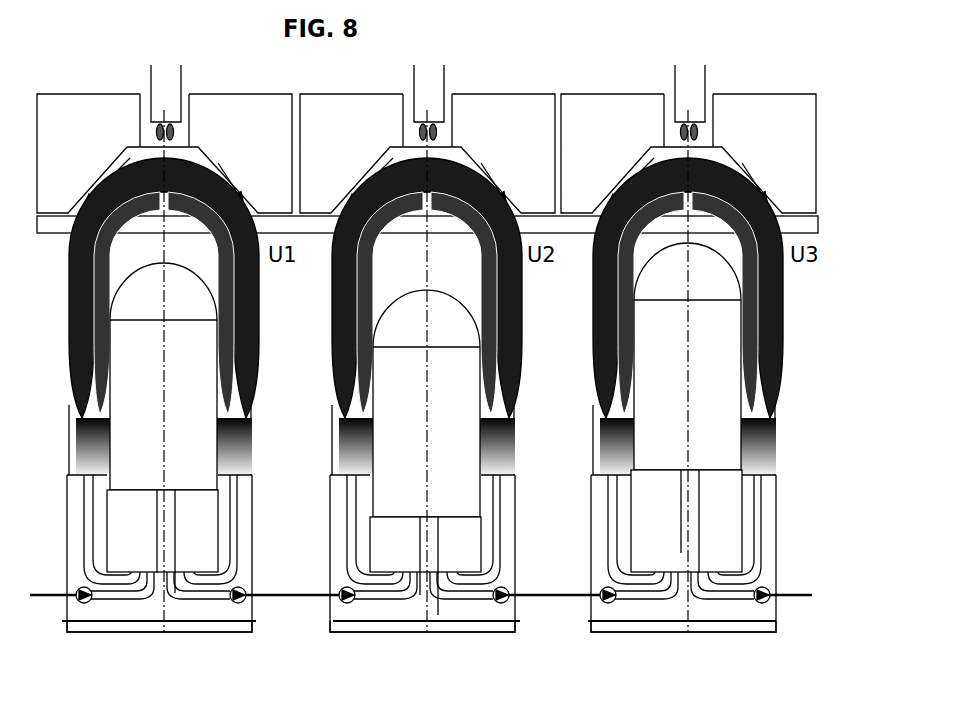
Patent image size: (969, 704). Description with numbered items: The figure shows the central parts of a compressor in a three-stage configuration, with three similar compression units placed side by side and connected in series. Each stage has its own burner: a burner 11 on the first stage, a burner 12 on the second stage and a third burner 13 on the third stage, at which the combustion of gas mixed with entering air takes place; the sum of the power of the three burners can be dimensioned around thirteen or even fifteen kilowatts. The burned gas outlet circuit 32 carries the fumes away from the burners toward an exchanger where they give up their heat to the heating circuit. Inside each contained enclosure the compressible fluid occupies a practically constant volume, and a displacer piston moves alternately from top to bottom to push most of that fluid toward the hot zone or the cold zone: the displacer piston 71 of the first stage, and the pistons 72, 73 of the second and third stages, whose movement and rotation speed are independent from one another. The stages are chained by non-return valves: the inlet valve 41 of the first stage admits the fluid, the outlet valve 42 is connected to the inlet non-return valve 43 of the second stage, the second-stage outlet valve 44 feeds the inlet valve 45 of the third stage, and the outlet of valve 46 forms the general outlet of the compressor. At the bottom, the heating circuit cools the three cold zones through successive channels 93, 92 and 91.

The burner 11 is at (200, 90).
The burner 12 is at (463, 90).
The third burner 13 is at (730, 90).
The burned gas outlet circuit 32 is at (818, 213).
The non-return valve 41 is at (77, 589).
The non-return valve 42 is at (244, 589).
The inlet non-return valve 43 is at (340, 592).
The valve 44 is at (507, 589).
The valve 45 is at (601, 592).
The valve 46 is at (768, 589).
The displacer piston 71 is at (155, 396).
The displacer piston 72 is at (413, 393).
The piston 73 is at (676, 383).
The channel 91 is at (122, 622).
The channel 92 is at (375, 622).
The channel 93 is at (628, 622).